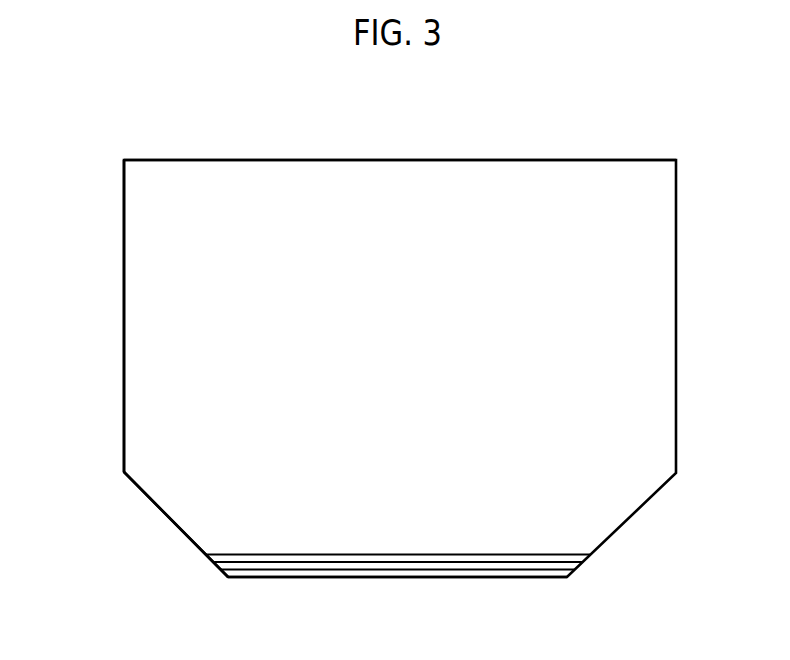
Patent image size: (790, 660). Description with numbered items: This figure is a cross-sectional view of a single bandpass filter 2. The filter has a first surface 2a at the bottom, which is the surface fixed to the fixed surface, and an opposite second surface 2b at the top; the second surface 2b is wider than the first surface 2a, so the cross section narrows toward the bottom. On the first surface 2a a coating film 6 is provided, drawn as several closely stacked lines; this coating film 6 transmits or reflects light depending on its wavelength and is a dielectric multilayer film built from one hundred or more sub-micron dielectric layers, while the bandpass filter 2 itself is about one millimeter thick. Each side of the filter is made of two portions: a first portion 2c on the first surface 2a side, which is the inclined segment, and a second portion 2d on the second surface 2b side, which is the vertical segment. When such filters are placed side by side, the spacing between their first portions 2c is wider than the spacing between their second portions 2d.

The bandpass filter 2 is at (380, 203).
The first surface 2a is at (427, 577).
The second surface 2b is at (435, 160).
The first portion 2c is at (180, 529).
The second portion 2d is at (124, 285).
The coating film 6 is at (572, 567).